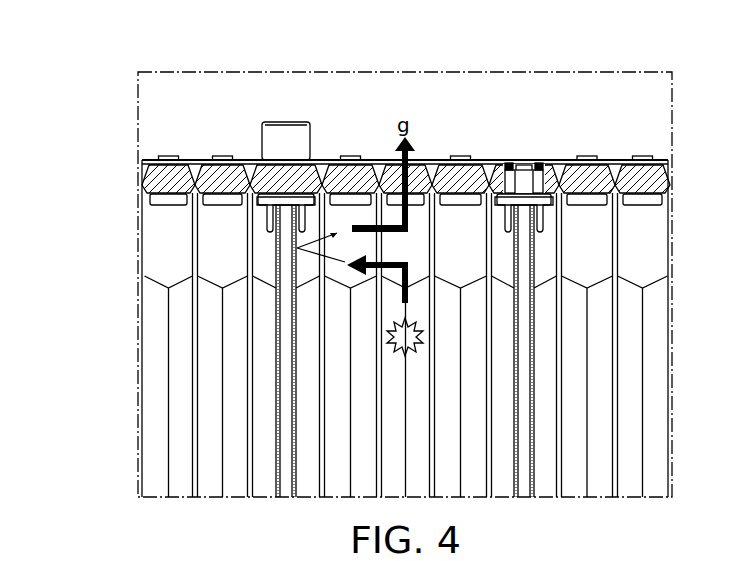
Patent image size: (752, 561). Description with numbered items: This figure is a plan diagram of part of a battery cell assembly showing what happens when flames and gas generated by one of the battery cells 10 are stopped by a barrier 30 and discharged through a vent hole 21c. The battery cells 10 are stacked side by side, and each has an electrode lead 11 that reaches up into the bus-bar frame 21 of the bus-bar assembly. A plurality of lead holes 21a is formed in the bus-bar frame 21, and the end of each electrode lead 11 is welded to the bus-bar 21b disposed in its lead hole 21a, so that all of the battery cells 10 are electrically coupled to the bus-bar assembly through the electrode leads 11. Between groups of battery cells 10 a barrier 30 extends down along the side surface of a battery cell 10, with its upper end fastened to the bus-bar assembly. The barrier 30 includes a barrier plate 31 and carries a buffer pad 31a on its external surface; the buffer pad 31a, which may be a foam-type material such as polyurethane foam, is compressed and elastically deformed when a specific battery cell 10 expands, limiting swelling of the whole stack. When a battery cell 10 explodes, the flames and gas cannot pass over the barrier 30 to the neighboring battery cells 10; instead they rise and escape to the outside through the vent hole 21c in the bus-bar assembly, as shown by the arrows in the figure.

The battery cell 10 is at (633, 310).
The electrode lead 11 is at (615, 240).
The bus-bar frame 21 is at (377, 158).
The lead hole 21a is at (490, 175).
The bus-bar 21b is at (460, 175).
The vent hole 21c is at (385, 178).
The barrier 30 is at (282, 347).
The barrier plate 31 is at (287, 248).
The buffer pad 31a is at (273, 267).